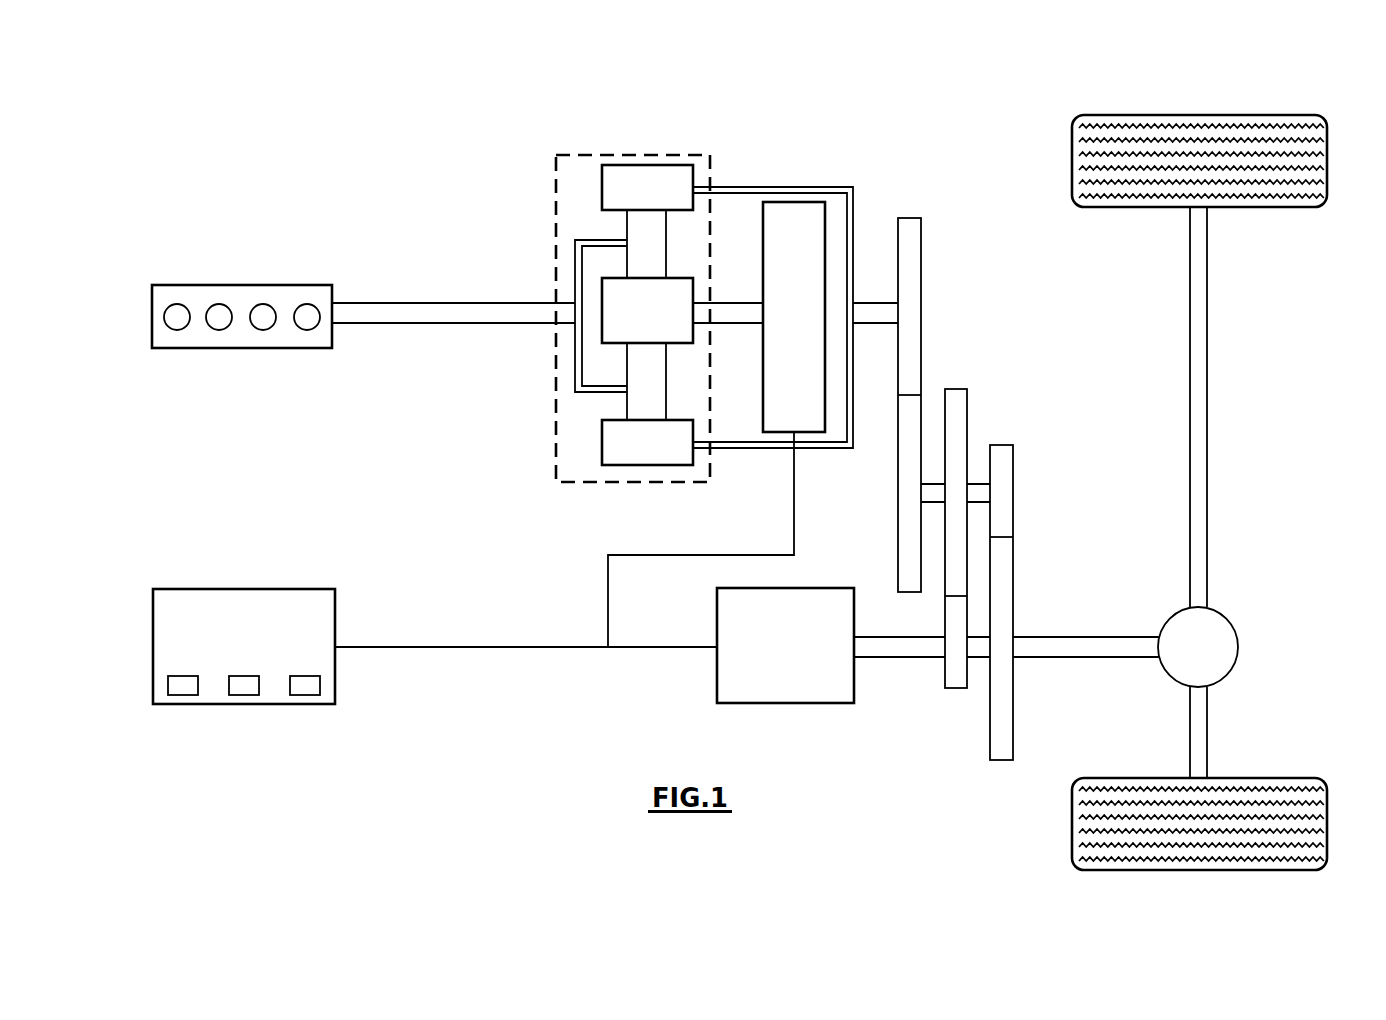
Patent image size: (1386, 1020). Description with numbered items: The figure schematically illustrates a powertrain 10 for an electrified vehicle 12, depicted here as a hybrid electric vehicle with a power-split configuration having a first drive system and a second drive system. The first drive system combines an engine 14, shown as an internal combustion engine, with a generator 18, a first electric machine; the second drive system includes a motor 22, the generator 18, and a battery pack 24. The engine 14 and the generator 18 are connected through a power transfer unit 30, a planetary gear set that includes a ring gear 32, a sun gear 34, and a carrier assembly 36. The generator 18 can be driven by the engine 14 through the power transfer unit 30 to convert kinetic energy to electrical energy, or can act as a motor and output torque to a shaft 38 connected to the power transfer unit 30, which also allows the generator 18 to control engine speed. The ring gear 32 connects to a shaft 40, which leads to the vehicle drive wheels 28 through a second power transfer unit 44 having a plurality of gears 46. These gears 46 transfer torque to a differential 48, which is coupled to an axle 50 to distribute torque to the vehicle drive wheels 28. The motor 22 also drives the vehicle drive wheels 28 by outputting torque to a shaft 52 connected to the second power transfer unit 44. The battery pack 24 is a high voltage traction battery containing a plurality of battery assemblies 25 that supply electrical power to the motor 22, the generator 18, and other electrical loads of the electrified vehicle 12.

The powertrain 10 is at (390, 178).
The electrified vehicle 12 is at (854, 81).
The engine 14 is at (170, 285).
The generator 18 is at (772, 202).
The motor 22 is at (854, 688).
The battery pack 24 is at (172, 589).
The battery assemblies 25 is at (303, 695).
The vehicle drive wheels 28 is at (1327, 822).
The power transfer unit 30 is at (556, 440).
The ring gear 32 is at (602, 187).
The sun gear 34 is at (602, 288).
The carrier assembly 36 is at (575, 375).
The shaft 38 is at (728, 301).
The shaft 40 is at (873, 302).
The second power transfer unit 44 is at (996, 348).
The gears 46 is at (1013, 490).
The differential 48 is at (1228, 667).
The axle 50 is at (1207, 395).
The shaft 52 is at (910, 657).